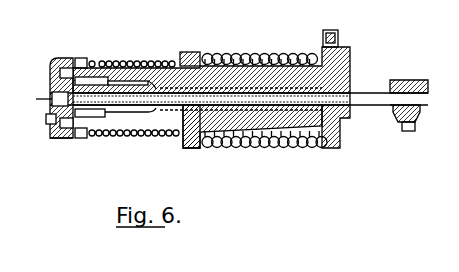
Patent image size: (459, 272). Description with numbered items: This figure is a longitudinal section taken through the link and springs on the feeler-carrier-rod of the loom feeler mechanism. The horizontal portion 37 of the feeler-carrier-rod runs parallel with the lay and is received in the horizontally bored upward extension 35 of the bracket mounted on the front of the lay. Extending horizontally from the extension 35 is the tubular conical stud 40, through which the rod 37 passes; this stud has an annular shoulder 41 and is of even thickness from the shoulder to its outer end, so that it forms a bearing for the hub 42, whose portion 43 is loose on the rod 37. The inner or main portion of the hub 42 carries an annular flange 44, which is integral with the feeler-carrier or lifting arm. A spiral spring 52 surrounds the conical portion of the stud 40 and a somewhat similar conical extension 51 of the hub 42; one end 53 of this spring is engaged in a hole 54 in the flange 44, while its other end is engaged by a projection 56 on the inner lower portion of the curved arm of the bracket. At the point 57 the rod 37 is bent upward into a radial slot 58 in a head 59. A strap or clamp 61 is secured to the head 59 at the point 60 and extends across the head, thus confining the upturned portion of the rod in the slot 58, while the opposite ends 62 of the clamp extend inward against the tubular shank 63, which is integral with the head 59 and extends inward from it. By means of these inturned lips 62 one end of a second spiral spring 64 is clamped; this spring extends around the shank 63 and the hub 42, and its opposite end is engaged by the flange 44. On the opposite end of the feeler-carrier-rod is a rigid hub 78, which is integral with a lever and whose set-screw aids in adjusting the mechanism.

The upward extension 35 is at (382, 137).
The horizontal portion of the feeler-carrier-rod 37 is at (350, 112).
The tubular conical stud 40 is at (305, 75).
The annular shoulder 41 is at (257, 67).
The hub 42 is at (146, 61).
The hub portion 43 is at (101, 138).
The annular flange 44 is at (188, 148).
The conical extension of the hub 51 is at (215, 67).
The spiral spring 52 is at (266, 148).
The spring end 53 is at (202, 50).
The hole 54 is at (186, 55).
The projection 56 is at (328, 30).
The upturned bend of the rod 57 is at (36, 100).
The radial slot 58 is at (52, 96).
The head 59 is at (52, 70).
The clamp securing point 60 is at (48, 120).
The strap or clamp 61 is at (60, 140).
The clamp ends 62 is at (82, 58).
The tubular shank 63 is at (96, 61).
The spiral spring 64 is at (139, 130).
The hub 78 is at (420, 78).